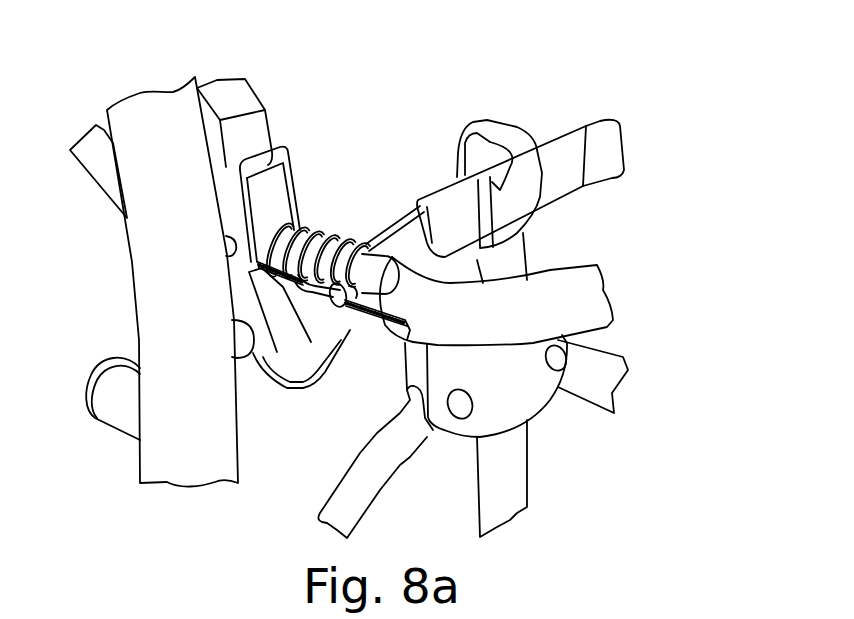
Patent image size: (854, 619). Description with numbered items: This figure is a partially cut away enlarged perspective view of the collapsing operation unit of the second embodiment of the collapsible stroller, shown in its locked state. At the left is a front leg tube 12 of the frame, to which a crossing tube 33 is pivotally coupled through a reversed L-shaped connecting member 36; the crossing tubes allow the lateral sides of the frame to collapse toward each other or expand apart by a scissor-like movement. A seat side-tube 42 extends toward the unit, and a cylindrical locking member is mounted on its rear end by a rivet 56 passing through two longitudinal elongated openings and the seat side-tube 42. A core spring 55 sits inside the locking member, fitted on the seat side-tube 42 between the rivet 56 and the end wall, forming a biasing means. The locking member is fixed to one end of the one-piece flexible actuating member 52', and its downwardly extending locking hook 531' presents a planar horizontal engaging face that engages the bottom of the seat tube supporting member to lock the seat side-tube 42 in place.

The front leg tube 12 is at (146, 469).
The connecting member 36 is at (227, 207).
The crossing tube 33 is at (237, 90).
The seat side-tube 42 is at (267, 225).
The core spring 55 is at (313, 224).
The rivet 56 is at (316, 313).
The locking hook 531' is at (301, 411).
The actuating member 52' is at (529, 301).